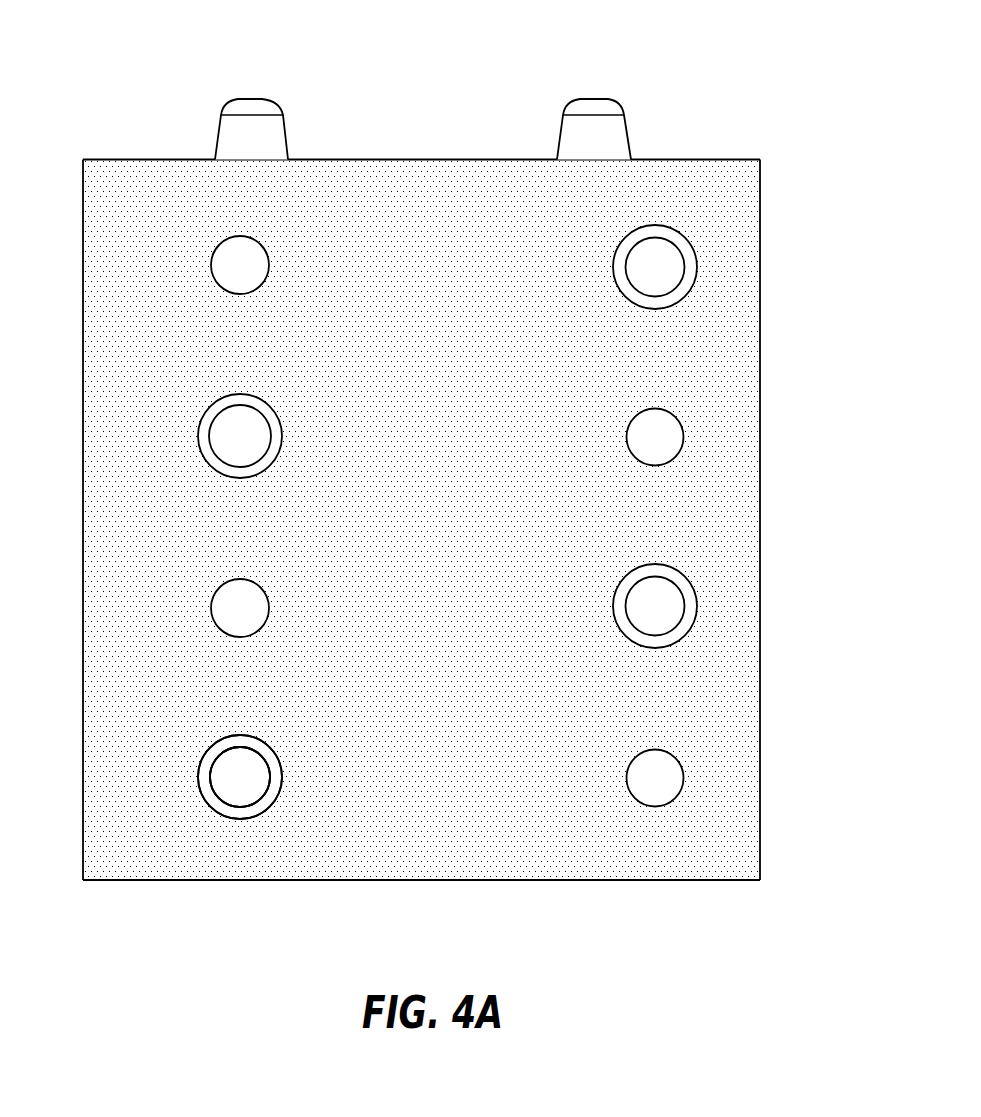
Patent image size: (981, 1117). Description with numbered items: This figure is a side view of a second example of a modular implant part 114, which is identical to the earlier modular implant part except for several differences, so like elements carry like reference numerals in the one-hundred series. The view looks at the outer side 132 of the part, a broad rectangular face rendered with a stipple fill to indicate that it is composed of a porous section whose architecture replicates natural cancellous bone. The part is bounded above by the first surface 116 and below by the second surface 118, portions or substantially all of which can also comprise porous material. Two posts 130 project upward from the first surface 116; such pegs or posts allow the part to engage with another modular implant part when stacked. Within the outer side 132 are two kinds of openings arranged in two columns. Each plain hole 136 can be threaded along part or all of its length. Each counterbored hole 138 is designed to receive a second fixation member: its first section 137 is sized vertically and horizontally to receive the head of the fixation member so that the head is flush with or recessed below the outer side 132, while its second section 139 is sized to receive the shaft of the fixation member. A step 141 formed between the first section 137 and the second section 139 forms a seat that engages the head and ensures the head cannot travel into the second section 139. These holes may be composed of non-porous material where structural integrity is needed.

The modular implant part 114 is at (120, 50).
The first surface 116 is at (423, 158).
The second surface 118 is at (422, 880).
The posts 130 is at (250, 98).
The outer side 132 is at (578, 850).
The hole 136 is at (212, 268).
The first section 137 is at (278, 778).
The counterbored hole 138 is at (207, 408).
The second section 139 is at (212, 778).
The step 141 is at (205, 767).